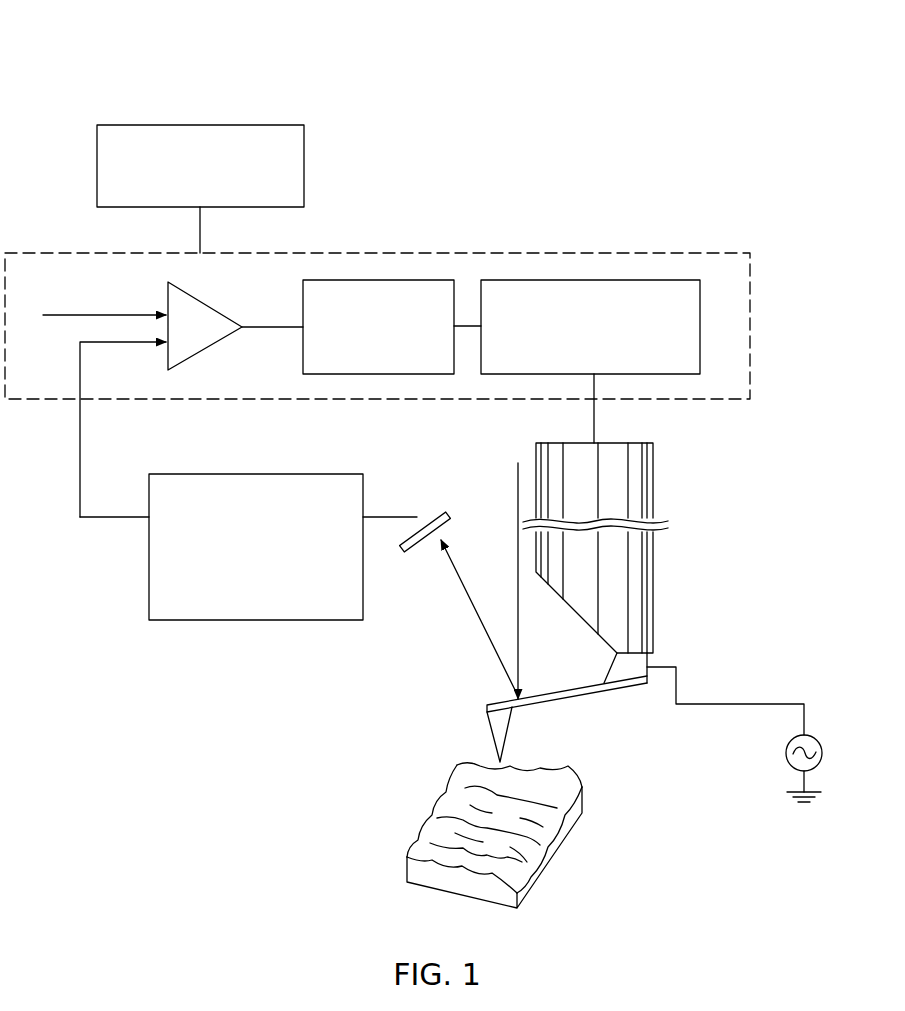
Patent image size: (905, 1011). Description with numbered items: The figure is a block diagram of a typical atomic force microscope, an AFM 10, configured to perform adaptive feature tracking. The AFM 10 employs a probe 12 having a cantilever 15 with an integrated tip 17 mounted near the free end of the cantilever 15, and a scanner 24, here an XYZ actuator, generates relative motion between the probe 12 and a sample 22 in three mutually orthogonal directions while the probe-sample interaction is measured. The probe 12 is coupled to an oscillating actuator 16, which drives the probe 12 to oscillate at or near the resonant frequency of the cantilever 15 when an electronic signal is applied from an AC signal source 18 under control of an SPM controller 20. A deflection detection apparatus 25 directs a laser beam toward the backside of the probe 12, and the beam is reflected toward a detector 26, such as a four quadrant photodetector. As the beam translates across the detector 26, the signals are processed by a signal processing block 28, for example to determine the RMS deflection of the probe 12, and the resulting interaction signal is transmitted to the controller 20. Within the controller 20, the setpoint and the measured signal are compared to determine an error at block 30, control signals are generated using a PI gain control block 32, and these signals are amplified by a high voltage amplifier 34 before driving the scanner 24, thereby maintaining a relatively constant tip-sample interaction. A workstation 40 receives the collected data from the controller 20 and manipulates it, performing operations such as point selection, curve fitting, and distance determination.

The AFM 10 is at (671, 59).
The probe 12 is at (573, 703).
The cantilever 15 is at (585, 683).
The oscillating actuator 16 is at (640, 664).
The tip 17 is at (490, 733).
The AC signal source 18 is at (812, 733).
The SPM controller 20 is at (587, 253).
The sample 22 is at (428, 813).
The scanner 24 is at (689, 444).
The deflection detection apparatus 25 is at (410, 485).
The detector 26 is at (418, 548).
The signal processing block 28 is at (172, 474).
The error block 30 is at (207, 350).
The PI gain control block 32 is at (381, 280).
The high voltage amplifier 34 is at (521, 280).
The workstation 40 is at (254, 125).